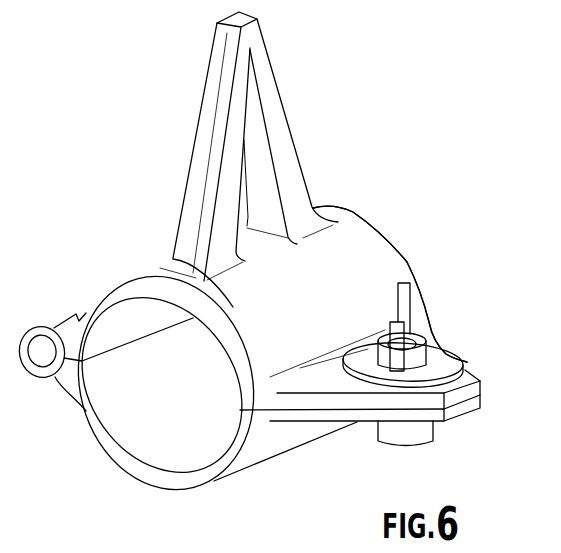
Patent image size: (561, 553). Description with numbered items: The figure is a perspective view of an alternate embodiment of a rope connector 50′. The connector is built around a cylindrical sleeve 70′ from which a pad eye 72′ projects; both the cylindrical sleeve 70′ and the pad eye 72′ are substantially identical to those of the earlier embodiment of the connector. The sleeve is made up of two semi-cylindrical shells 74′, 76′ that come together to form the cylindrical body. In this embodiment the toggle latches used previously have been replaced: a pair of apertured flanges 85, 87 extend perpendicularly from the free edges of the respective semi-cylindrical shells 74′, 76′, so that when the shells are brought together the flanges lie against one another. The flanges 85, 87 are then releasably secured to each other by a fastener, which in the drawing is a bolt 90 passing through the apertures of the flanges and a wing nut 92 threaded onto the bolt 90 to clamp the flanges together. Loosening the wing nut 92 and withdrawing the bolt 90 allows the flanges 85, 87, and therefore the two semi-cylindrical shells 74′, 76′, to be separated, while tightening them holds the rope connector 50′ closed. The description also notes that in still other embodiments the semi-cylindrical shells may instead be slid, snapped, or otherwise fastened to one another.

The rope connector 50′ is at (483, 198).
The cylindrical sleeve 70′ is at (400, 167).
The pad eye 72′ is at (320, 88).
The semi-cylindrical shell 74′ is at (173, 259).
The semi-cylindrical shell 76′ is at (268, 498).
The apertured flange 85 is at (490, 463).
The apertured flange 87 is at (321, 463).
The bolt 90 is at (482, 292).
The wing nut 92 is at (522, 359).